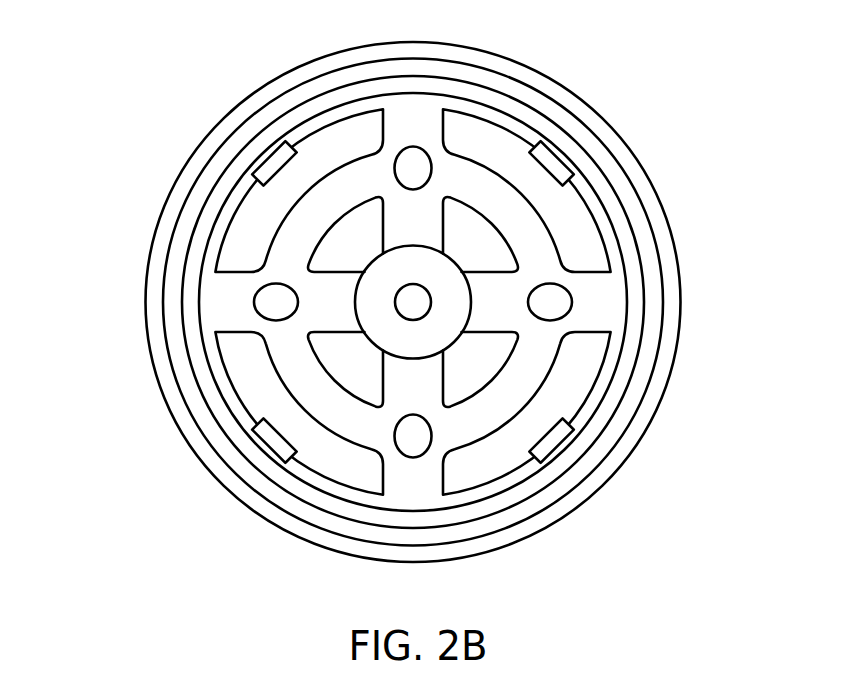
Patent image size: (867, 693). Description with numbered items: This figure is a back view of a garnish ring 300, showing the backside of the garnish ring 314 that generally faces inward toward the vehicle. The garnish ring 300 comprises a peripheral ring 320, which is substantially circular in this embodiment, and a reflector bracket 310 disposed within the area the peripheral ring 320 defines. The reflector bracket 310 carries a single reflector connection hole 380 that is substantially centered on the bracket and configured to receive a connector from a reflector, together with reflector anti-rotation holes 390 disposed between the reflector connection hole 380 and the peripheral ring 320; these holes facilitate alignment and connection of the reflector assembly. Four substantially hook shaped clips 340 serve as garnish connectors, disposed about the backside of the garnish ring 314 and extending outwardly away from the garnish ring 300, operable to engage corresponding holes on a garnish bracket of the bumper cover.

The garnish ring 300 is at (147, 137).
The reflector bracket 310 is at (343, 153).
The backside of the garnish ring 314 is at (663, 138).
The peripheral ring 320 is at (538, 69).
The hook shaped clips 340 is at (273, 167).
The reflector connection hole 380 is at (413, 284).
The reflector anti-rotation hole 390 is at (412, 146).